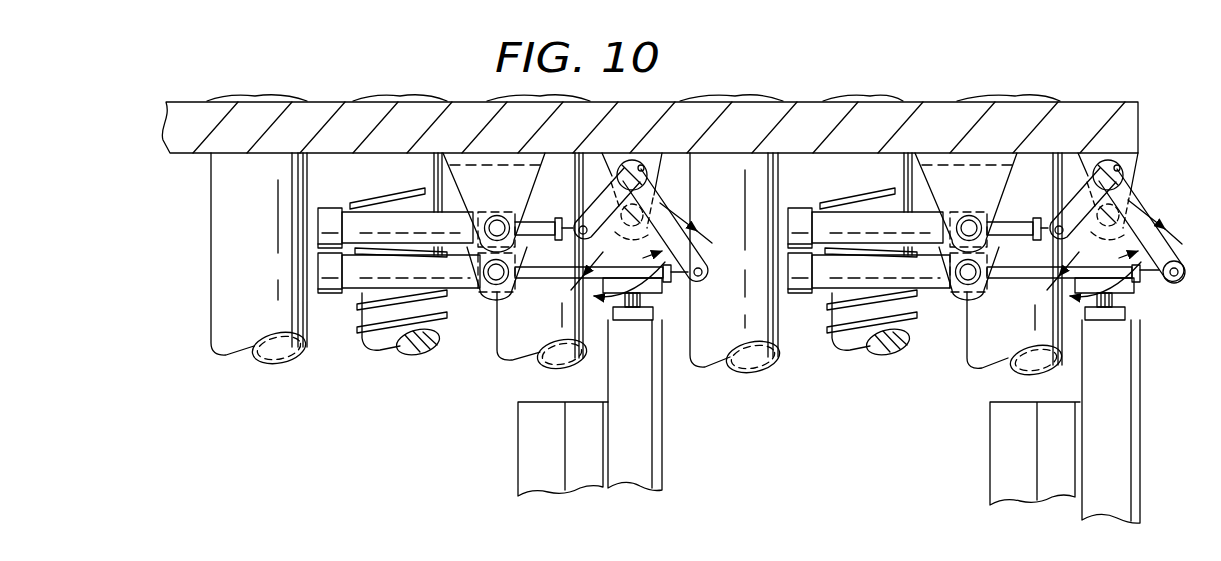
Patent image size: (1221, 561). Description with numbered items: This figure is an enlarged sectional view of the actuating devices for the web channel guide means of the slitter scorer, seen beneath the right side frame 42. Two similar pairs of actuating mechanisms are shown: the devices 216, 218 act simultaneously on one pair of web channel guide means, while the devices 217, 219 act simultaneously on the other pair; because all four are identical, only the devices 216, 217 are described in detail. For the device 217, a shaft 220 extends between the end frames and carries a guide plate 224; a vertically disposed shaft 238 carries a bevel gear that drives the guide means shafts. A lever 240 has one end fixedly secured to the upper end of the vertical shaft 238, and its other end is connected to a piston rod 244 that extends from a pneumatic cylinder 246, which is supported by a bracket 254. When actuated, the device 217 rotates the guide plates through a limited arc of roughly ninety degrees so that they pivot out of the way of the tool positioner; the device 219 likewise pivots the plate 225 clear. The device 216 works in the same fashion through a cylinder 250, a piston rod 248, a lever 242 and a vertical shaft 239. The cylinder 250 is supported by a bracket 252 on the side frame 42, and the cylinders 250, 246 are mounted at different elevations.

The right side frame 42 is at (180, 136).
The device 216 is at (850, 185).
The device 217 is at (865, 324).
The device 218 is at (346, 203).
The device 219 is at (468, 308).
The shaft 220 is at (1148, 421).
The guide plate 224 is at (989, 453).
The plate 225 is at (518, 425).
The vertically disposed shaft 238 is at (1147, 204).
The vertical shaft 239 is at (1150, 158).
The lever 240 is at (1190, 287).
The lever 242 is at (1113, 197).
The piston rod 244 is at (1072, 298).
The pneumatic cylinder 246 is at (872, 335).
The piston rod 248 is at (978, 208).
The cylinder 250 is at (877, 199).
The bracket 252 is at (966, 157).
The bracket 254 is at (958, 297).